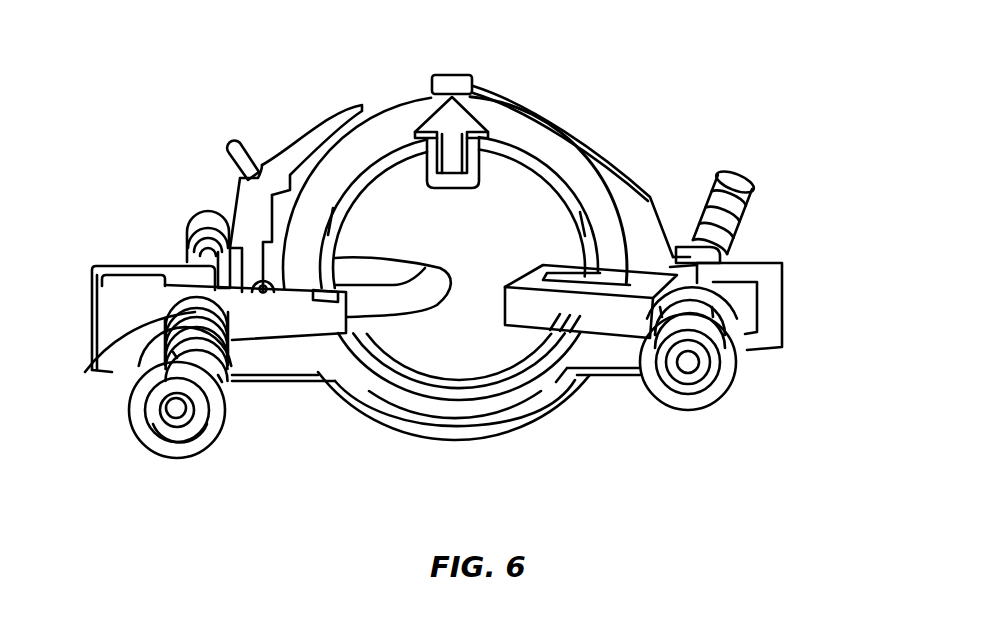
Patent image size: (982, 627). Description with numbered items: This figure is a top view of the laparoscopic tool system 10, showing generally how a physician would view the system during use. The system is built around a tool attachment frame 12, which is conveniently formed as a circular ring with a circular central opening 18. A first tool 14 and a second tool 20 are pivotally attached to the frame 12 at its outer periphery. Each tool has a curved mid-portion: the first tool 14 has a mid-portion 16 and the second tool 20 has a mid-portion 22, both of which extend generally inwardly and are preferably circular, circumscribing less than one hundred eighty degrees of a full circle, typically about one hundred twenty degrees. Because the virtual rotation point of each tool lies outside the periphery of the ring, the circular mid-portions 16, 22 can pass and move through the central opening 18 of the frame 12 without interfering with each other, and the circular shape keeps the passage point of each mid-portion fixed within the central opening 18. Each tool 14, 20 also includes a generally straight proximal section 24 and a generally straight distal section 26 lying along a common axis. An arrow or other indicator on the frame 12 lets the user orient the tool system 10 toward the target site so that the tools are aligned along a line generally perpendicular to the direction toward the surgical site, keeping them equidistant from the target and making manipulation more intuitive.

The laparoscopic tool system 10 is at (711, 97).
The tool attachment frame 12 is at (473, 89).
The first tool 14 is at (170, 210).
The mid-portion 16 is at (429, 275).
The central opening 18 is at (427, 345).
The second tool 20 is at (766, 392).
The mid-portion 22 is at (530, 266).
The proximal section 24 is at (118, 340).
The distal section 26 is at (740, 204).